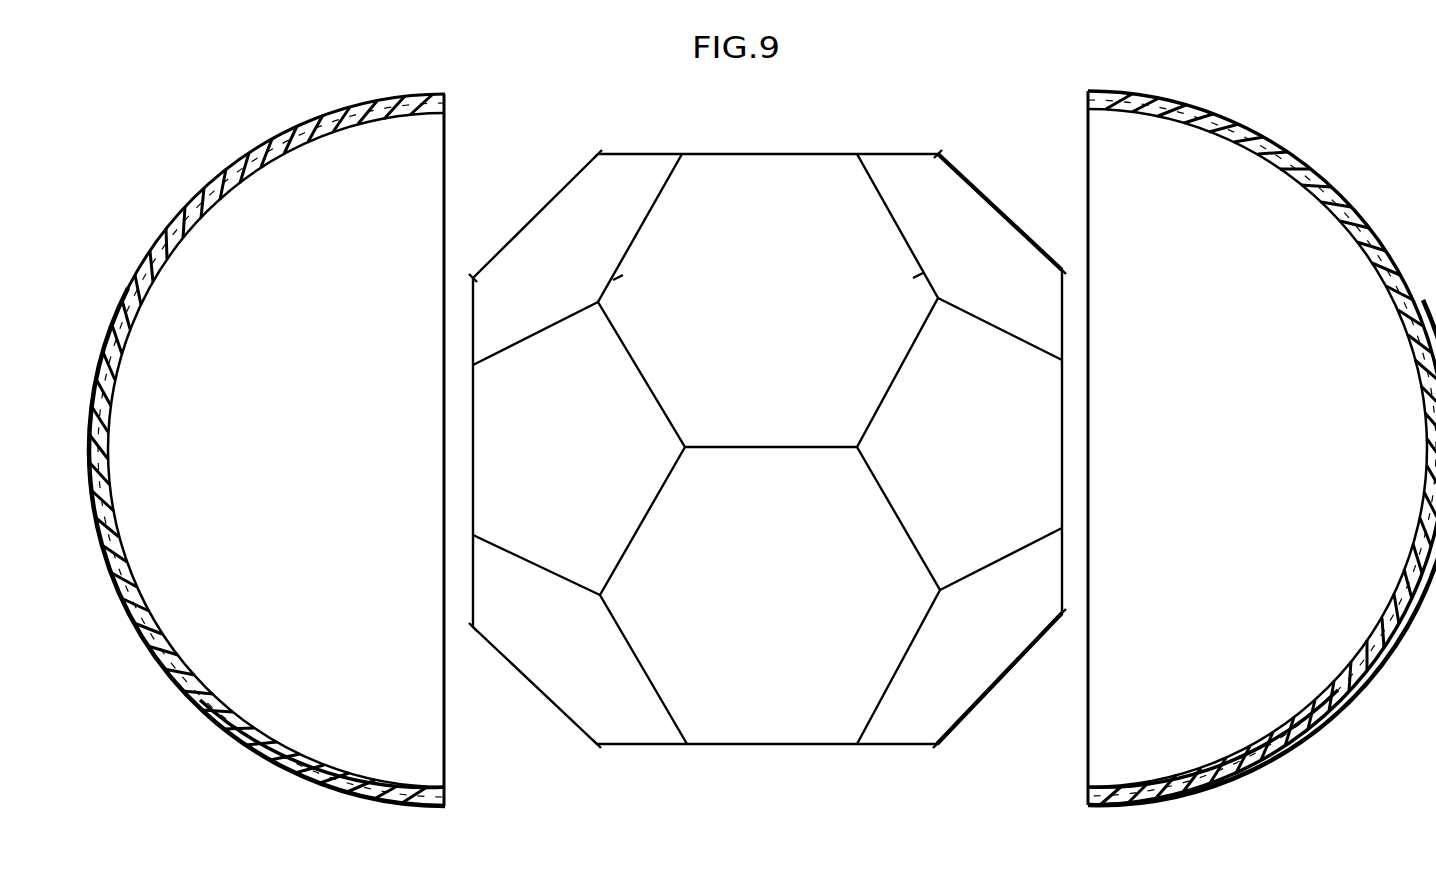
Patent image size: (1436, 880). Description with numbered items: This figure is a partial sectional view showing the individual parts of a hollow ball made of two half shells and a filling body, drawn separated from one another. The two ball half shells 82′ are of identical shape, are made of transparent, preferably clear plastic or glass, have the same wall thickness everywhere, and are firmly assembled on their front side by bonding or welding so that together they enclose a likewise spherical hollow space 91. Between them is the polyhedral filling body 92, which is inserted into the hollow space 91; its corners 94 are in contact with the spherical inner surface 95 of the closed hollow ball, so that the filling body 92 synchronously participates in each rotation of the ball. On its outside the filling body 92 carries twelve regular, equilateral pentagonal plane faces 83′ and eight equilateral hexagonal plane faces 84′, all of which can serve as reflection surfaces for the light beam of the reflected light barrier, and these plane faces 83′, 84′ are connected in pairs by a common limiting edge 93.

The hollow space 91 is at (272, 450).
The ball half shell 82′ is at (177, 223).
The spherical inner surface 95 is at (267, 733).
The filling body 92 is at (779, 748).
The equilateral hexagonal plane face 84′ is at (732, 258).
The regular pentagonal plane face 83′ is at (562, 243).
The common limiting edge 93 is at (618, 332).
The corner 94 is at (475, 275).